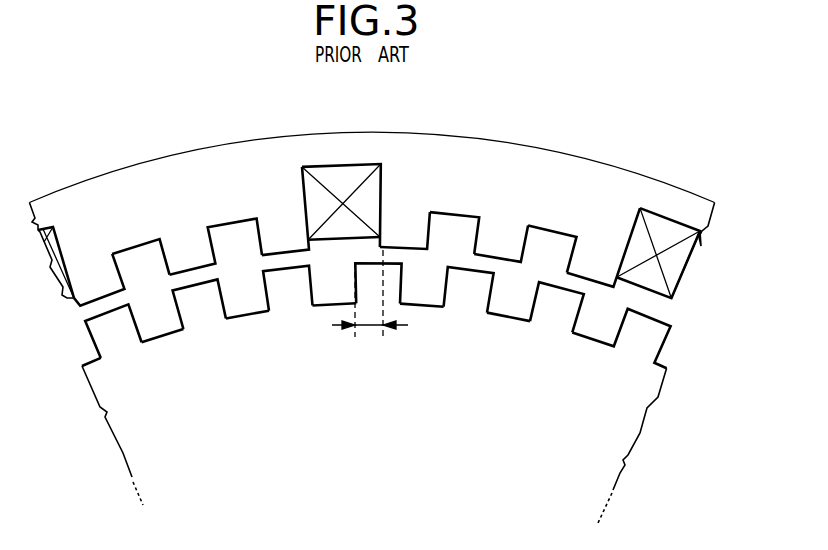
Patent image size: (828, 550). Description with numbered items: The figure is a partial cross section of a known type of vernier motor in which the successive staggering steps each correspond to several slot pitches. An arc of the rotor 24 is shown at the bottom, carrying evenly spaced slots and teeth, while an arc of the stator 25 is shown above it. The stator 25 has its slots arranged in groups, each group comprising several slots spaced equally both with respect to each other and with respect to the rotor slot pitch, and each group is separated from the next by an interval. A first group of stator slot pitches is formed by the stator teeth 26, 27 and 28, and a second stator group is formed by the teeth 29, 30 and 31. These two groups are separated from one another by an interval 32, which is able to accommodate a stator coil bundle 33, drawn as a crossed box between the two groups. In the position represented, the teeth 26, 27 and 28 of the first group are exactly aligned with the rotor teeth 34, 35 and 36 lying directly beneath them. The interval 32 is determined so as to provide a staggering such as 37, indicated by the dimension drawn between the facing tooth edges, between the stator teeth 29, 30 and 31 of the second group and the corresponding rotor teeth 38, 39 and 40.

The rotor 24 is at (587, 437).
The stator 25 is at (560, 188).
The stator tooth 26 is at (97, 273).
The stator tooth 27 is at (188, 243).
The stator tooth 28 is at (287, 232).
The stator tooth 29 is at (407, 228).
The stator tooth 30 is at (500, 240).
The stator tooth 31 is at (595, 260).
The interval 32 is at (345, 162).
The stator coil bundle 33 is at (368, 198).
The rotor tooth 34 is at (110, 327).
The rotor tooth 35 is at (198, 300).
The rotor tooth 36 is at (283, 285).
The staggering 37 is at (370, 327).
The rotor tooth 38 is at (390, 282).
The rotor tooth 39 is at (468, 290).
The rotor tooth 40 is at (552, 305).